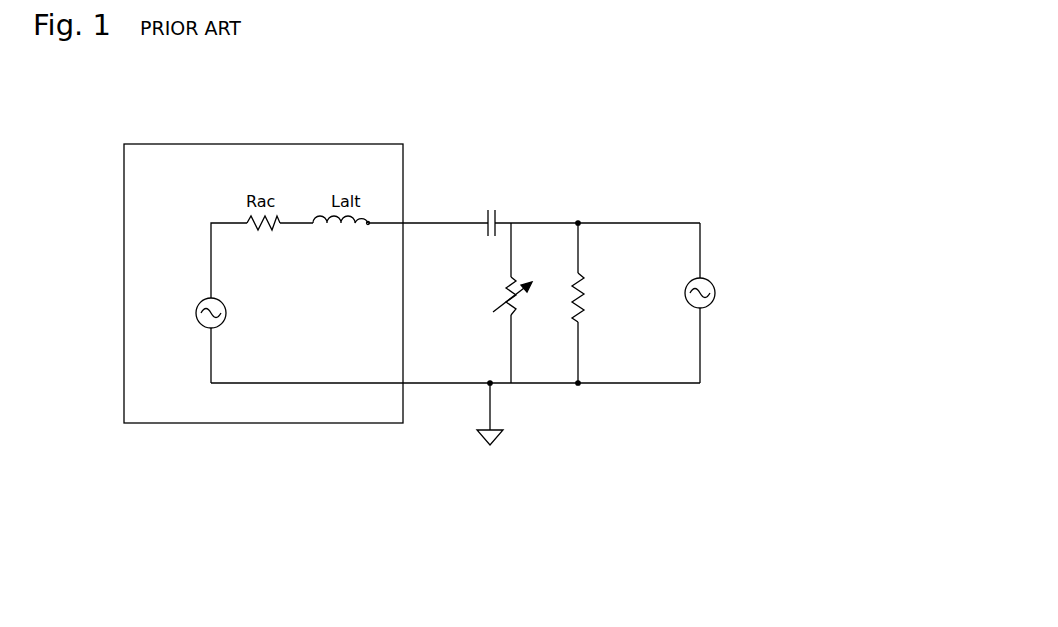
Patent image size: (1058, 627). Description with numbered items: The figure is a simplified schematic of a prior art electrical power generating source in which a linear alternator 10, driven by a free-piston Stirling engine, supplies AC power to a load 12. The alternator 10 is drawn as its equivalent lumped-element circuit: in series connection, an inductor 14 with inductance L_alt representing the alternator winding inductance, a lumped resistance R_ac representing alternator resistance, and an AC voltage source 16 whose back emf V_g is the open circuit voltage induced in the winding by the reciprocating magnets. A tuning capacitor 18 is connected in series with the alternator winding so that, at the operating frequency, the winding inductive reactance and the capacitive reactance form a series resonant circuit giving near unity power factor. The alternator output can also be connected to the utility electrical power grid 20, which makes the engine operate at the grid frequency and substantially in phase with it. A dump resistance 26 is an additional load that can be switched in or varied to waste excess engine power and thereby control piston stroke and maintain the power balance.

The linear alternator 10 is at (124, 407).
The load 12 is at (582, 283).
The inductor 14 is at (369, 221).
The AC voltage source 16 is at (198, 300).
The tuning capacitor 18 is at (485, 232).
The utility electrical power grid 20 is at (705, 310).
The dump resistance 26 is at (508, 285).